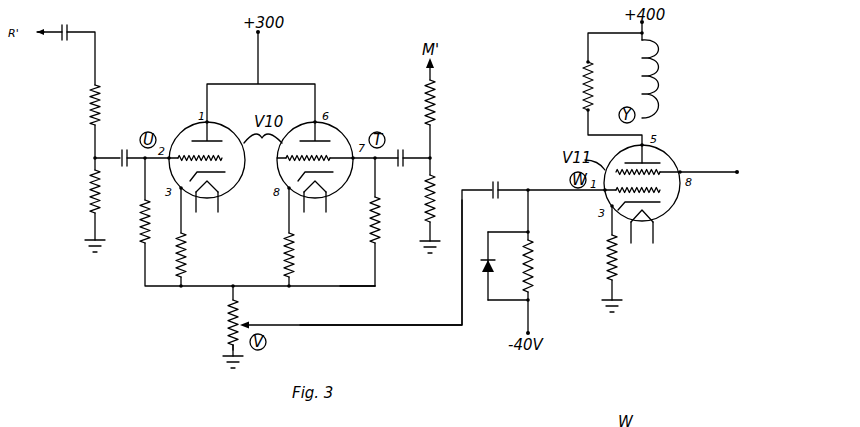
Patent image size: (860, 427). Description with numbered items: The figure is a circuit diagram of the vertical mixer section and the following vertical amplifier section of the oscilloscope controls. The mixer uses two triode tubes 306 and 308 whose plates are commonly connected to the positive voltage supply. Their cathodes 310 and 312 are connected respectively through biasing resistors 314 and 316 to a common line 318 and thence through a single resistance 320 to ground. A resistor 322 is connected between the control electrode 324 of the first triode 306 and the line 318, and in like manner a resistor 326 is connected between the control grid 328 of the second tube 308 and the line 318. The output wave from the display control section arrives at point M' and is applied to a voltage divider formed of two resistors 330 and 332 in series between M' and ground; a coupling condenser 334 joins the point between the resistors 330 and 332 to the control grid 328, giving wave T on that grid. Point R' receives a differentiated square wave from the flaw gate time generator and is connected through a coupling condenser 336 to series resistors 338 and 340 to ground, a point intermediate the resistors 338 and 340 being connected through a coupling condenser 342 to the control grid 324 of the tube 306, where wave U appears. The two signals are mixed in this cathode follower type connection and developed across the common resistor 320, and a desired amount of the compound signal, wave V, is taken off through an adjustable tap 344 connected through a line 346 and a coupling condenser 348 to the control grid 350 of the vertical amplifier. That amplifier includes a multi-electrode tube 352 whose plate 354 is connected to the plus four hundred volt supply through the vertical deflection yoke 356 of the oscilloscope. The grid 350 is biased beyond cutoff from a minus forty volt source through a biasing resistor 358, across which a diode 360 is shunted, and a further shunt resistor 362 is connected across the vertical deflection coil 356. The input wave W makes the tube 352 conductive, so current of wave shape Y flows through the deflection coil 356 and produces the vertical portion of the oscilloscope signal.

The first triode tube 306 is at (187, 129).
The second triode tube 308 is at (327, 129).
The cathode of first triode 310 is at (225, 172).
The cathode of second triode 312 is at (333, 172).
The biasing resistor 314 is at (188, 246).
The biasing resistor 316 is at (294, 252).
The common line 318 is at (335, 288).
The single resistance 320 is at (231, 340).
The resistor 322 is at (141, 240).
The control electrode 324 is at (222, 155).
The resistor 326 is at (380, 235).
The control grid 328 is at (336, 150).
The resistor 330 is at (436, 102).
The resistor 332 is at (436, 192).
The coupling condenser 334 is at (407, 166).
The coupling condenser 336 is at (58, 40).
The resistor 338 is at (91, 110).
The resistor 340 is at (91, 200).
The coupling condenser 342 is at (122, 150).
The adjustable tap 344 is at (242, 325).
The line 346 is at (425, 325).
The coupling condenser 348 is at (499, 185).
The control grid 350 is at (660, 202).
The multi-electrode tube 352 is at (670, 211).
The plate 354 is at (652, 160).
The vertical deflection yoke 356 is at (650, 78).
The biasing resistor 358 is at (534, 262).
The diode 360 is at (484, 262).
The shunt resistor 362 is at (585, 85).